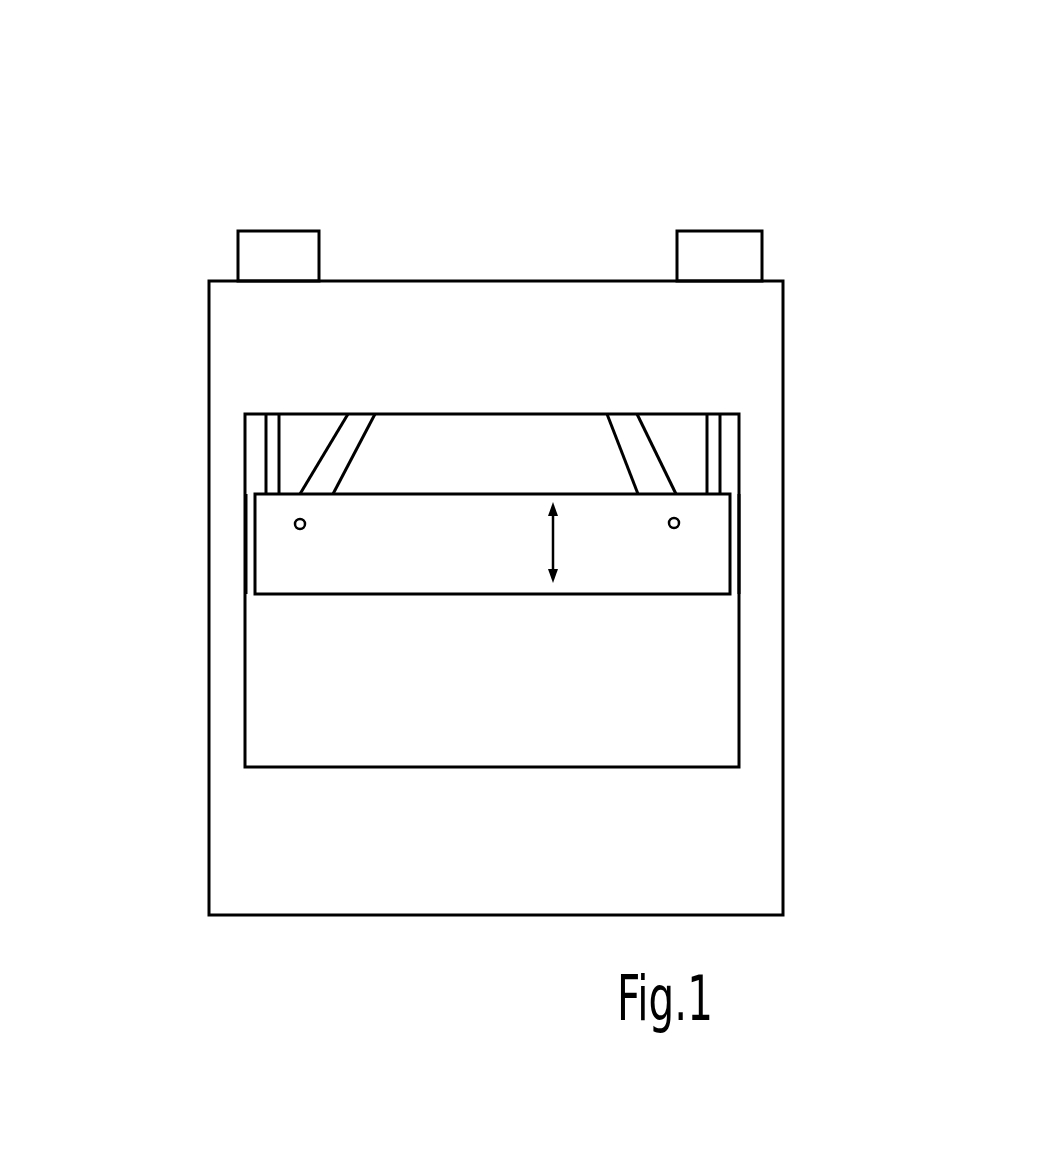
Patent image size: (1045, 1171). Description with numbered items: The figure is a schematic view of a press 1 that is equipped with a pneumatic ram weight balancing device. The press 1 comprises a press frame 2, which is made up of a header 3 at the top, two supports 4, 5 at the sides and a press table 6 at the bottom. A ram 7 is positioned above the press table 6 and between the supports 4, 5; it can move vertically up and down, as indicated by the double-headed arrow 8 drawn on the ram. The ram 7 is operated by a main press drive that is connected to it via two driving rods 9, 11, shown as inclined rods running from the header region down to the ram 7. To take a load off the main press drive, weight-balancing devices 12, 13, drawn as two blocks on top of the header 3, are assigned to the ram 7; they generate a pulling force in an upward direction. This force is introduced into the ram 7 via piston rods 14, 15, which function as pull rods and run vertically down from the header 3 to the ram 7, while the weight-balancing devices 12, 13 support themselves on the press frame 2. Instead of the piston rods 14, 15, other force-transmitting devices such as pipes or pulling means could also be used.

The press 1 is at (506, 461).
The press frame 2 is at (802, 408).
The header 3 is at (558, 368).
The support 4 is at (238, 596).
The support 5 is at (770, 593).
The press table 6 is at (518, 847).
The ram 7 is at (495, 562).
The arrow 8 is at (555, 556).
The driving rod 9 is at (343, 445).
The driving rod 11 is at (633, 437).
The weight-balancing device 12 is at (328, 205).
The weight-balancing device 13 is at (762, 207).
The piston rod 14 is at (267, 460).
The piston rod 15 is at (722, 460).